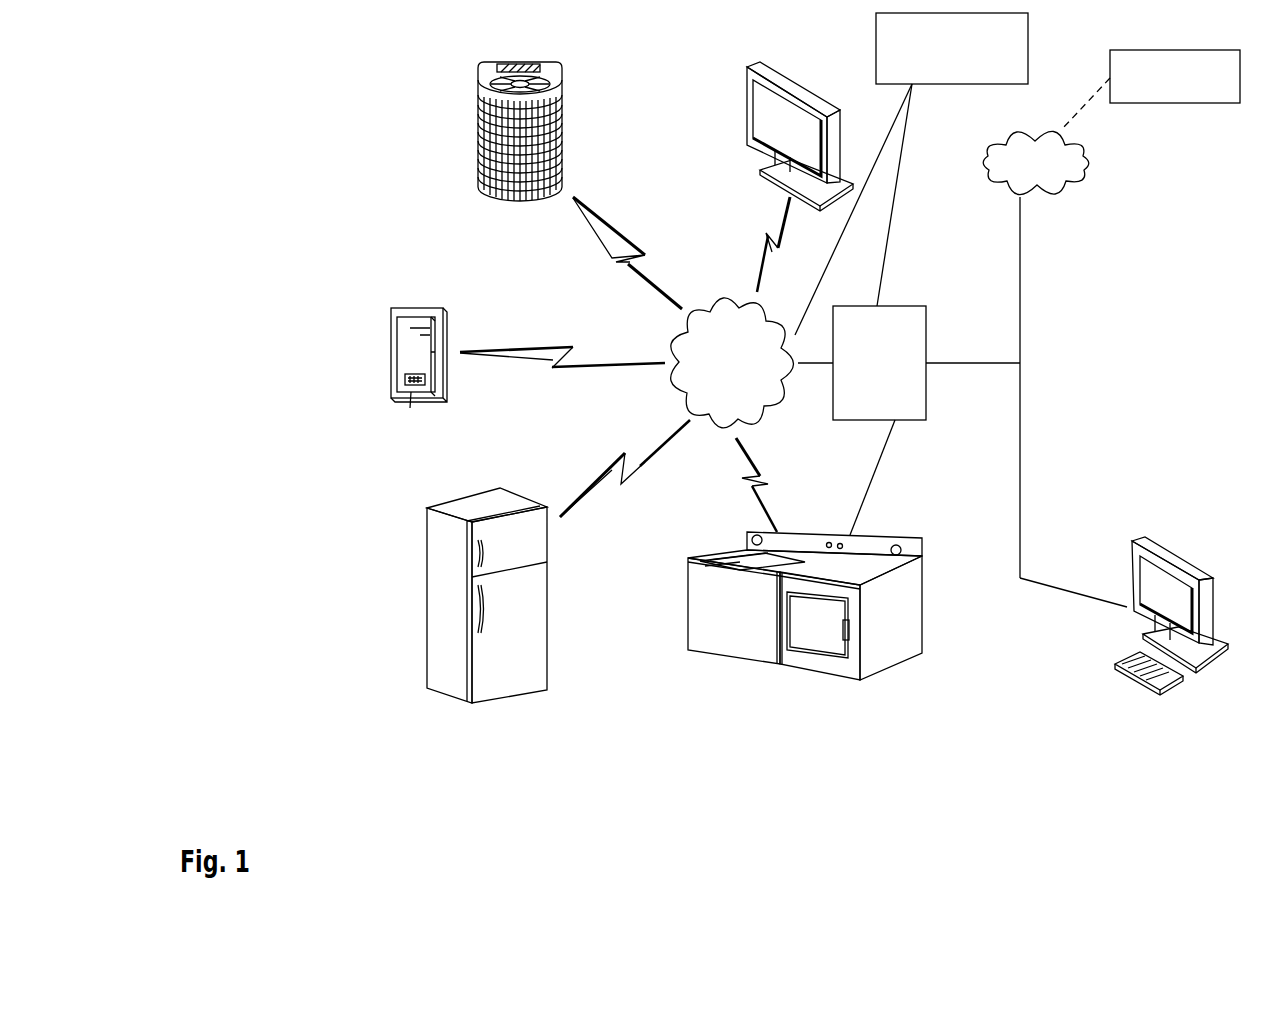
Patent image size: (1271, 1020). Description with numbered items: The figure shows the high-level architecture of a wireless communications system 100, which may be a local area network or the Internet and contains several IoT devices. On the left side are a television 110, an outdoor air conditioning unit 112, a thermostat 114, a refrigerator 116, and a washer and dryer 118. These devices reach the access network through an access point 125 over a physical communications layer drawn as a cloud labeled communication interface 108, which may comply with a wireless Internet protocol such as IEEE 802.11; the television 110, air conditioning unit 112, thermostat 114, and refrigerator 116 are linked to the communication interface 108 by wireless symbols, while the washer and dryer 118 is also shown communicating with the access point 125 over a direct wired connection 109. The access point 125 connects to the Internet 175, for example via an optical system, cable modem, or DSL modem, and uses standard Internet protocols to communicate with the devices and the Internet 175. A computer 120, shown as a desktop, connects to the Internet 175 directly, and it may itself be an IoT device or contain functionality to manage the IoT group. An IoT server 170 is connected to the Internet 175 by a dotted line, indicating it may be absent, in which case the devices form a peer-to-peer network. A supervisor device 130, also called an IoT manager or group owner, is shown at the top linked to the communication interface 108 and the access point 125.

The wireless communications system 100 is at (297, 107).
The communication interface 108 is at (775, 303).
The direct wired connection 109 is at (872, 477).
The television 110 is at (800, 84).
The outdoor air conditioning unit 112 is at (562, 68).
The thermostat 114 is at (428, 308).
The refrigerator 116 is at (447, 502).
The washer and dryer 118 is at (893, 535).
The computer 120 is at (1170, 552).
The access point 125 is at (885, 306).
The supervisor device 130 is at (911, 174).
The IoT server 170 is at (1183, 103).
The Internet 175 is at (997, 137).